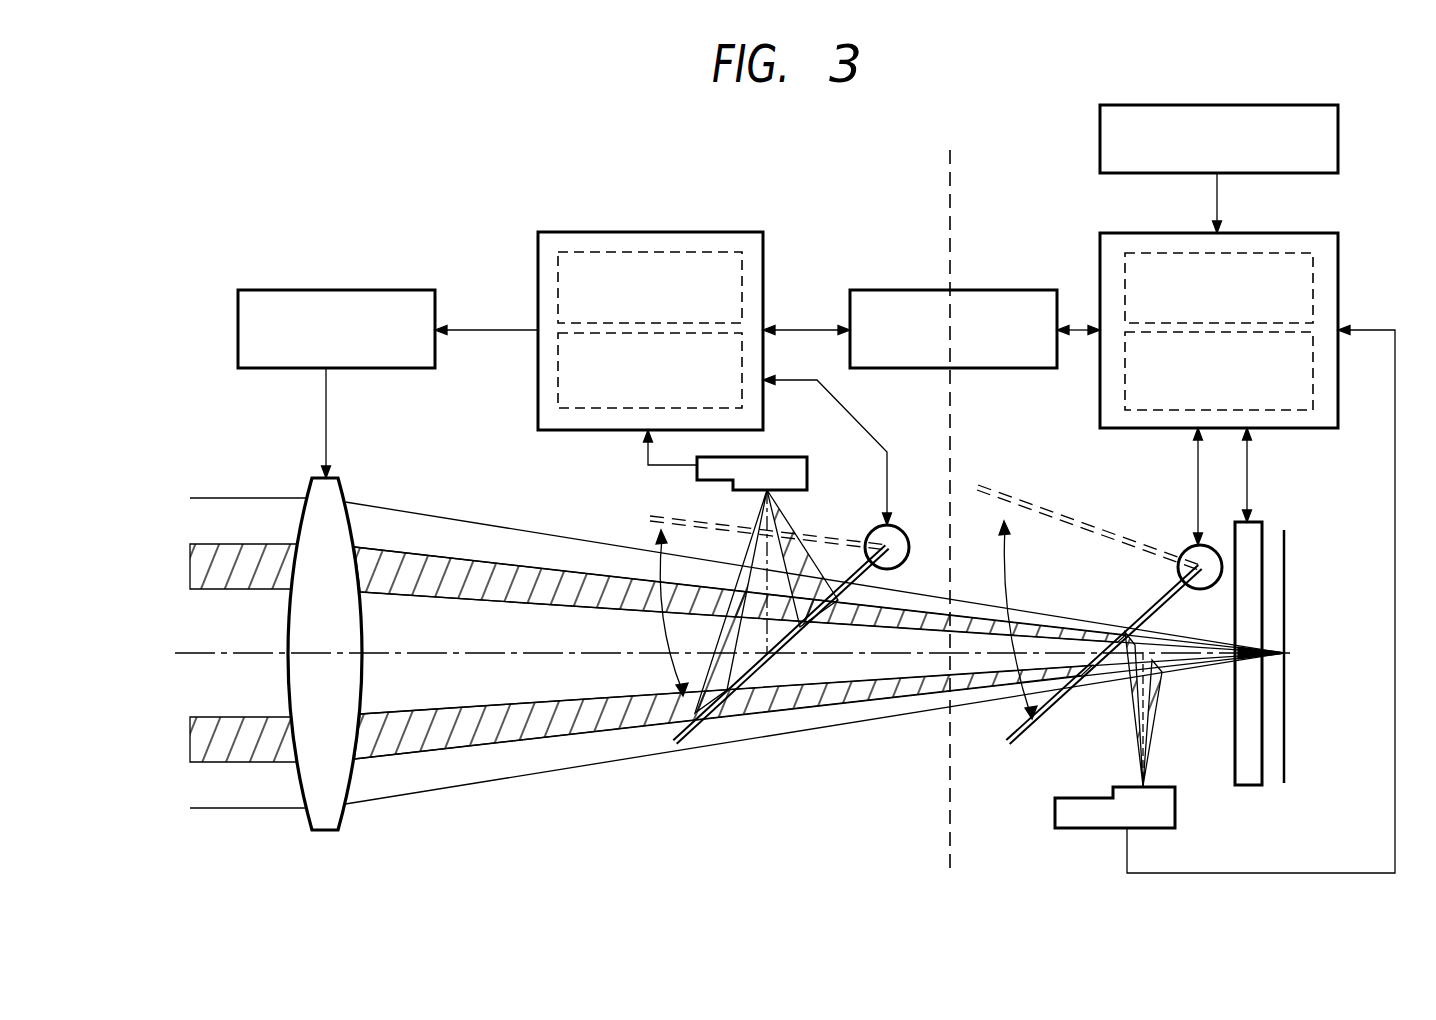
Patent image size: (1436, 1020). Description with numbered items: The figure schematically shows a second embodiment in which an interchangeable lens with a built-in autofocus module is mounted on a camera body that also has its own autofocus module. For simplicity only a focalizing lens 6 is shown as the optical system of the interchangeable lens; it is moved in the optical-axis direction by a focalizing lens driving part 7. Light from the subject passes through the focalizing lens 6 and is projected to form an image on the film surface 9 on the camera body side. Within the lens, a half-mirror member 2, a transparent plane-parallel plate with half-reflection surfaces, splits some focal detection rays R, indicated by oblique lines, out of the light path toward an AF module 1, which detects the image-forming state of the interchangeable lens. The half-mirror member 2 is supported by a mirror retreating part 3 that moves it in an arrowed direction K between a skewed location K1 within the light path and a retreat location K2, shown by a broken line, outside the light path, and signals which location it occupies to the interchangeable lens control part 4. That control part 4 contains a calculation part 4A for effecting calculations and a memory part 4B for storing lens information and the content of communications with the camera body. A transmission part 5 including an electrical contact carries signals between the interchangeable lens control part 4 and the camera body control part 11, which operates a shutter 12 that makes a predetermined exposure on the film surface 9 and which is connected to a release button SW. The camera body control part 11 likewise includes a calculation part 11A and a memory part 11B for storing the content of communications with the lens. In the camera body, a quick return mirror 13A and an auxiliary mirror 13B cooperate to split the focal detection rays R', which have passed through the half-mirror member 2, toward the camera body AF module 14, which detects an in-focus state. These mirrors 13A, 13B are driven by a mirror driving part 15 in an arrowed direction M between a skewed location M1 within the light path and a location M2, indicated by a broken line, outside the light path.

The AF module 1 is at (808, 463).
The half-mirror member 2 is at (742, 692).
The mirror retreating part 3 is at (895, 530).
The interchangeable lens control part 4 is at (642, 301).
The calculation part 4A is at (742, 275).
The memory part 4B is at (742, 393).
The transmission part 5 is at (1028, 290).
The focalizing lens 6 is at (343, 484).
The focalizing lens driving part 7 is at (405, 290).
The film surface 9 is at (1285, 775).
The camera body control part 11 is at (1256, 340).
The calculation part 11A is at (1313, 268).
The memory part 11B is at (1300, 408).
The shutter 12 is at (1255, 522).
The quick return mirror 13A is at (1020, 735).
The auxiliary mirror 13B is at (1166, 674).
The AF module 14 is at (1075, 828).
The mirror driving part 15 is at (1205, 590).
The release button SW is at (1338, 118).
The focal detection rays R is at (737, 639).
The focal detection rays R' is at (1142, 610).
The arrowed direction K is at (678, 672).
The location K1 is at (675, 745).
The retreat location K2 is at (655, 516).
The arrowed direction M is at (1006, 580).
The location M1 is at (1008, 745).
The location M2 is at (980, 487).